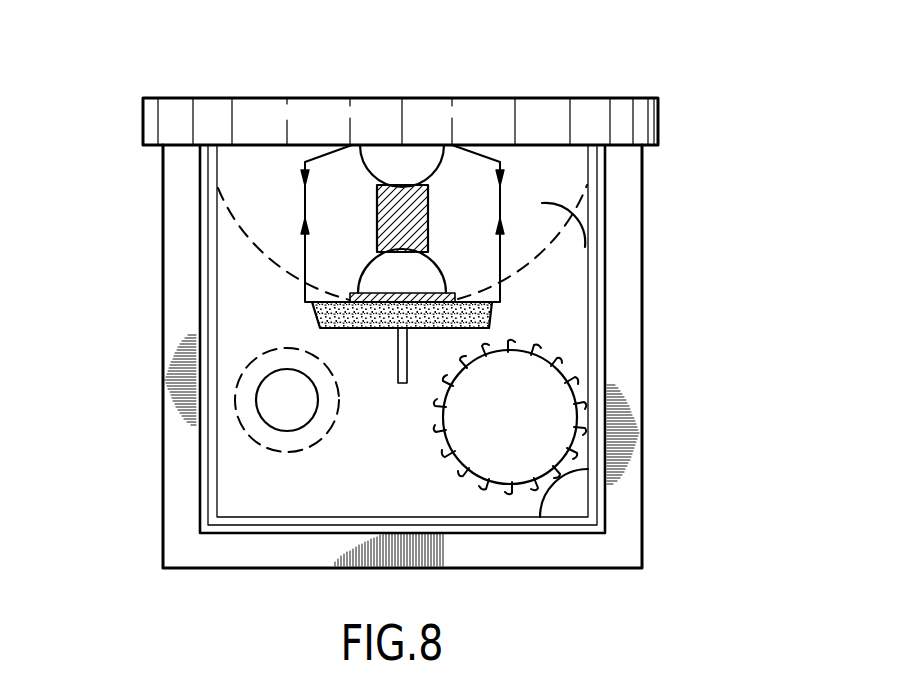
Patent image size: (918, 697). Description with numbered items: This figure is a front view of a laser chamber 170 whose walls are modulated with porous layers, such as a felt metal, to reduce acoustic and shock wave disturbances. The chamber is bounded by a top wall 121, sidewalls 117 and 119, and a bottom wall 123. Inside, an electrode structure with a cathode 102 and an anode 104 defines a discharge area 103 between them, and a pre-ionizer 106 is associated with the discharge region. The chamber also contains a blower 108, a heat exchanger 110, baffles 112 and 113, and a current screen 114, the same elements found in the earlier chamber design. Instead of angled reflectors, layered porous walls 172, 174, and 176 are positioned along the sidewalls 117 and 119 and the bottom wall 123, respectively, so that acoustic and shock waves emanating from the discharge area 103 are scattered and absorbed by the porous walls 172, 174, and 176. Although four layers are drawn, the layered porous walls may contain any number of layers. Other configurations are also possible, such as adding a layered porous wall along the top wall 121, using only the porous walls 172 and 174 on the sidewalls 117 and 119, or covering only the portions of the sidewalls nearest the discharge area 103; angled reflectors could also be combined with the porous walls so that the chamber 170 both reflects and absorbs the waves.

The laser chamber 170 is at (700, 103).
The top wall 121 is at (545, 118).
The pre-ionizer 106 is at (322, 148).
The cathode 102 is at (382, 176).
The discharge area 103 is at (405, 217).
The anode 104 is at (382, 288).
The current screen 114 is at (255, 243).
The baffle 113 is at (566, 223).
The layered porous wall 172 is at (188, 250).
The layered porous wall 174 is at (618, 322).
The layered porous wall 176 is at (493, 548).
The baffle 112 is at (563, 508).
The sidewall 117 is at (192, 398).
The sidewall 119 is at (622, 389).
The bottom wall 123 is at (325, 550).
The heat exchanger 110 is at (267, 416).
The blower 108 is at (490, 433).